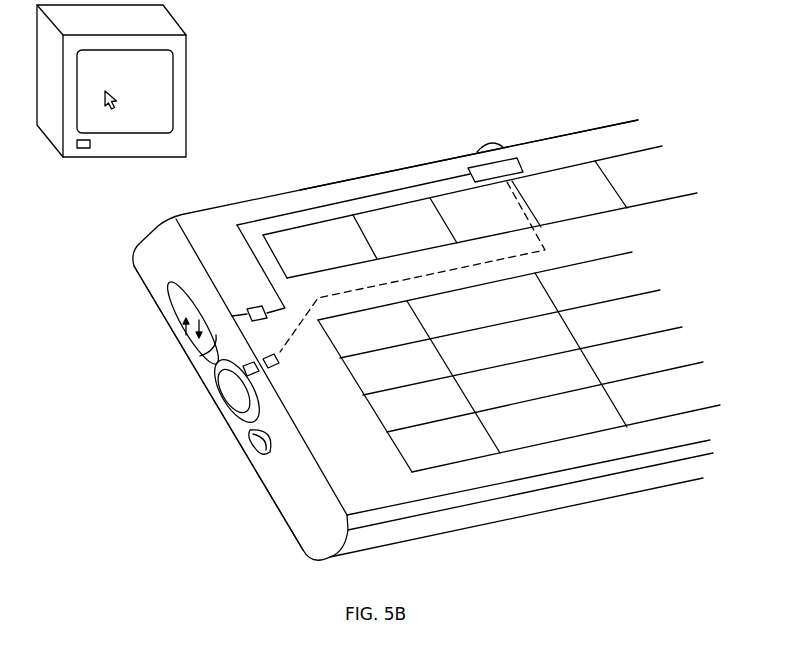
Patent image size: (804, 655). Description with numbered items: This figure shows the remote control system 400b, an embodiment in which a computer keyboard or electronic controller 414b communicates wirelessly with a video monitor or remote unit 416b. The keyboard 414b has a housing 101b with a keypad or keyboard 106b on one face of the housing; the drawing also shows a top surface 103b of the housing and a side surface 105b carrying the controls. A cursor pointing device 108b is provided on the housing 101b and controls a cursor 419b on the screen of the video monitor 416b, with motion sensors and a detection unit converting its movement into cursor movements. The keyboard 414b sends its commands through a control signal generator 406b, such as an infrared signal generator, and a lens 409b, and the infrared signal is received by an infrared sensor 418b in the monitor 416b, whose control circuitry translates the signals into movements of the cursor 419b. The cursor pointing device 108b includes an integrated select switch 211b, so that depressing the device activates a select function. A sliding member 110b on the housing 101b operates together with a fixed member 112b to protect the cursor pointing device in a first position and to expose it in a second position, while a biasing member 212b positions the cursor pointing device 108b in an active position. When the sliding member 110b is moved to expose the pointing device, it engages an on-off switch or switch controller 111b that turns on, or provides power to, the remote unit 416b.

The remote control system 400b is at (551, 83).
The housing 101b is at (626, 122).
The housing top surface 103b is at (370, 497).
The housing side surface 105b is at (158, 261).
The keypad or keyboard 106b is at (653, 320).
The cursor pointing device 108b is at (217, 397).
The sliding member 110b is at (180, 330).
The on-off switch or switch controller 111b is at (248, 308).
The fixed member 112b is at (255, 450).
The integrated select switch 211b is at (278, 365).
The biasing member 212b is at (258, 375).
The control signal generator 406b is at (520, 162).
The lens 409b is at (481, 145).
The computer keyboard or electronic controller 414b is at (580, 513).
The video monitor or remote unit 416b is at (188, 48).
The infrared sensor 418b is at (83, 150).
The cursor 419b is at (113, 89).